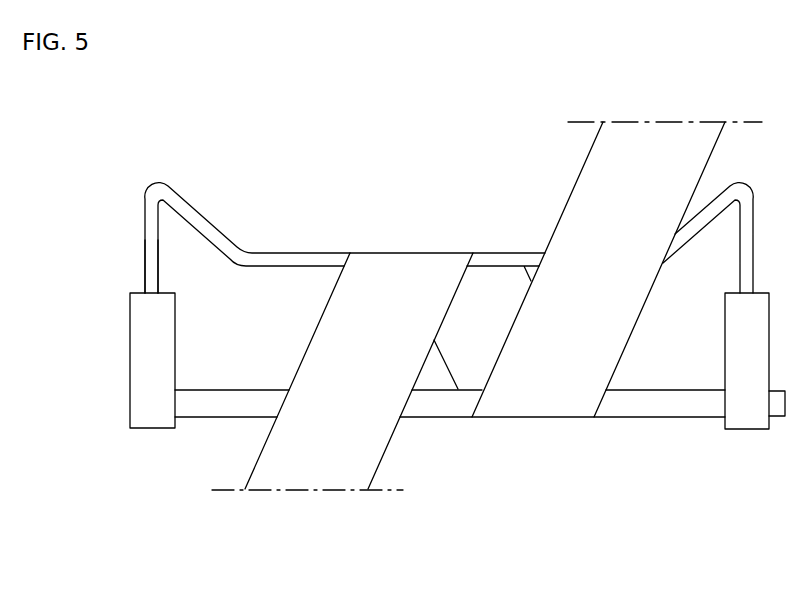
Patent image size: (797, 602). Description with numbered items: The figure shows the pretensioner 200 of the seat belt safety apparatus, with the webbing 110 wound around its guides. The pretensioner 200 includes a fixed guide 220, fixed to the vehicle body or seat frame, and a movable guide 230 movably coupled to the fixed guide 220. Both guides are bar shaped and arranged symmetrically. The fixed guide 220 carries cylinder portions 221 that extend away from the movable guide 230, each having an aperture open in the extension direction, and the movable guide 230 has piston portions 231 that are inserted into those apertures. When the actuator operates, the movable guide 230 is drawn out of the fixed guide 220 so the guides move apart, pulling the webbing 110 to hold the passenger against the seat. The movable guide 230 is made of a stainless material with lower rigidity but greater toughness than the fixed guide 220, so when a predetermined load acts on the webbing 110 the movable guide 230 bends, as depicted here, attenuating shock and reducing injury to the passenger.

The webbing 110 is at (315, 465).
The pretensioner 200 is at (407, 353).
The fixed guide 220 is at (653, 410).
The cylinder portions 221 is at (148, 372).
The movable guide 230 is at (315, 260).
The piston portions 231 is at (150, 249).